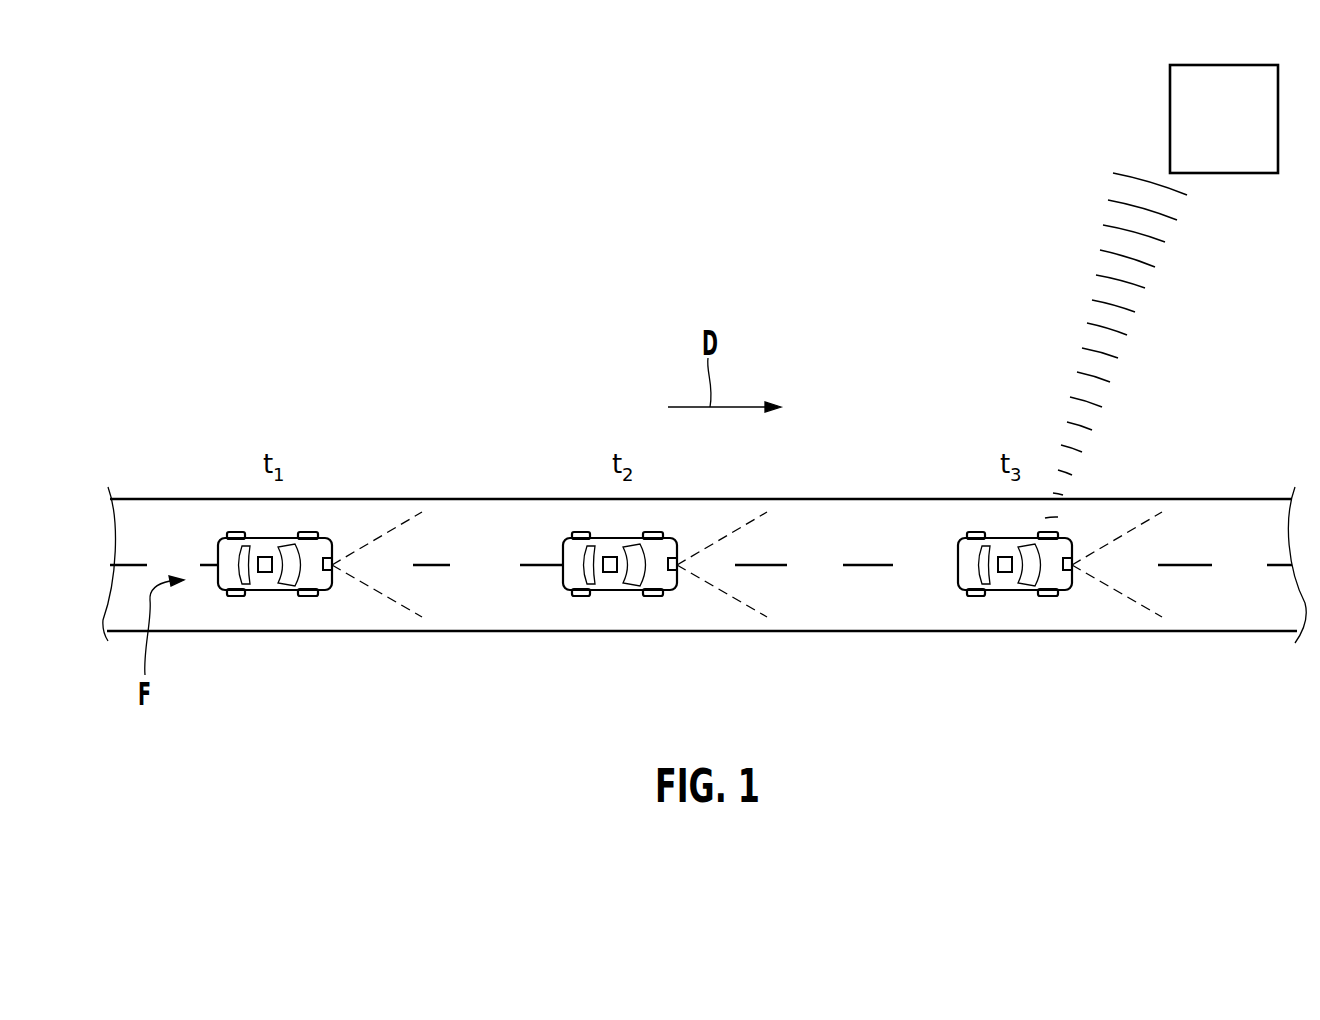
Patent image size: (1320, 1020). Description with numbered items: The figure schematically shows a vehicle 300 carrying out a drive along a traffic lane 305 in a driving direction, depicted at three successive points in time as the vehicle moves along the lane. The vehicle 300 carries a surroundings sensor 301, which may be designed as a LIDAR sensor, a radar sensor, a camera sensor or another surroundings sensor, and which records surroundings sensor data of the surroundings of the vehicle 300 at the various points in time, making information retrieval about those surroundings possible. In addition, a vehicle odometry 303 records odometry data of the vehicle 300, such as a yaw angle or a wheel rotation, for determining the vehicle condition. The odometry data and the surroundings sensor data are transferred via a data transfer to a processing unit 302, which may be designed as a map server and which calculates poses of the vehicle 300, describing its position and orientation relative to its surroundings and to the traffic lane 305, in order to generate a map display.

The vehicle 300 is at (226, 556).
The surroundings sensor 301 is at (326, 570).
The processing unit 302 is at (1182, 112).
The vehicle odometry 303 is at (265, 572).
The traffic lane 305 is at (492, 615).